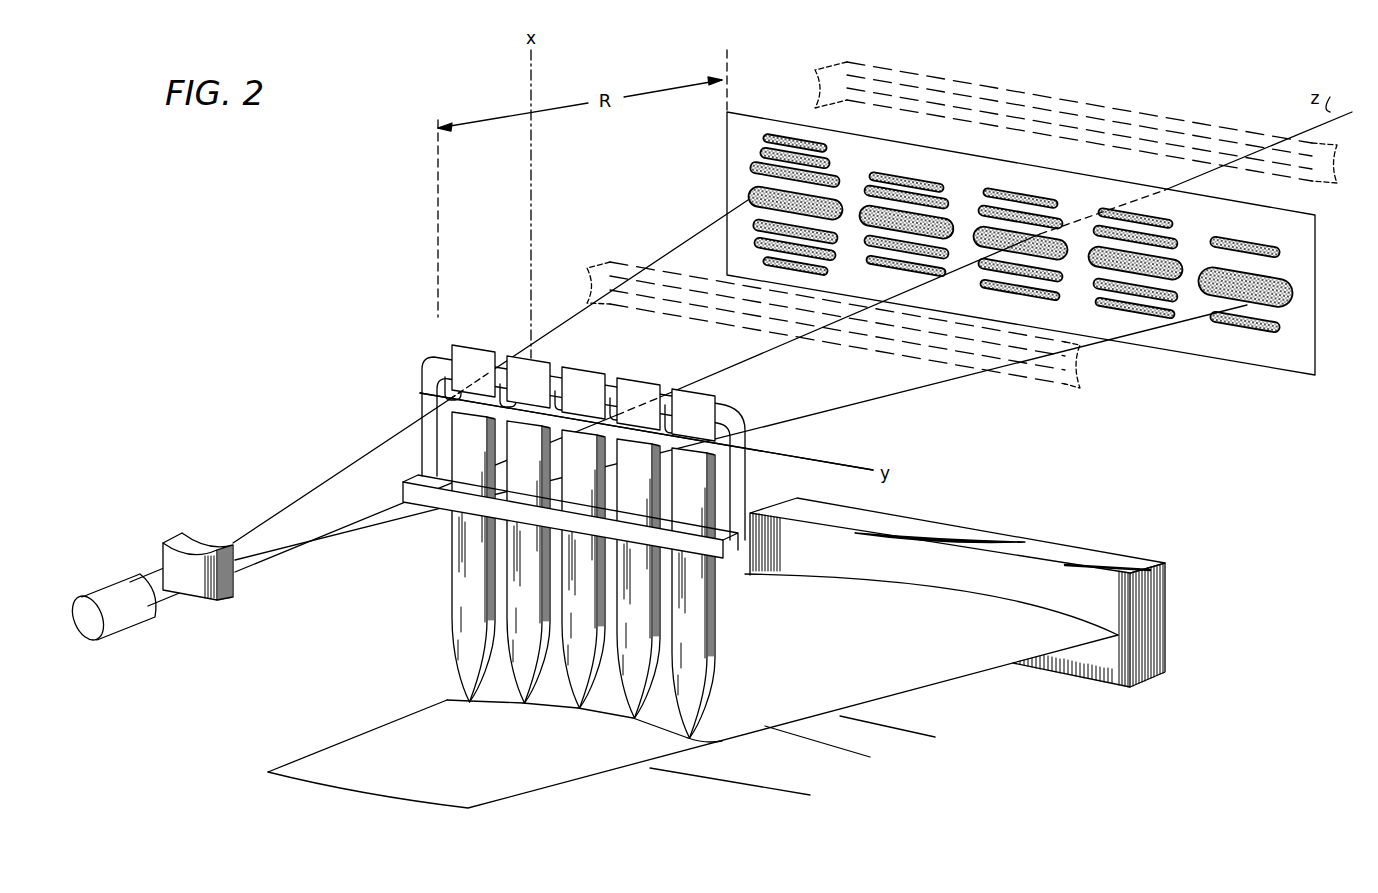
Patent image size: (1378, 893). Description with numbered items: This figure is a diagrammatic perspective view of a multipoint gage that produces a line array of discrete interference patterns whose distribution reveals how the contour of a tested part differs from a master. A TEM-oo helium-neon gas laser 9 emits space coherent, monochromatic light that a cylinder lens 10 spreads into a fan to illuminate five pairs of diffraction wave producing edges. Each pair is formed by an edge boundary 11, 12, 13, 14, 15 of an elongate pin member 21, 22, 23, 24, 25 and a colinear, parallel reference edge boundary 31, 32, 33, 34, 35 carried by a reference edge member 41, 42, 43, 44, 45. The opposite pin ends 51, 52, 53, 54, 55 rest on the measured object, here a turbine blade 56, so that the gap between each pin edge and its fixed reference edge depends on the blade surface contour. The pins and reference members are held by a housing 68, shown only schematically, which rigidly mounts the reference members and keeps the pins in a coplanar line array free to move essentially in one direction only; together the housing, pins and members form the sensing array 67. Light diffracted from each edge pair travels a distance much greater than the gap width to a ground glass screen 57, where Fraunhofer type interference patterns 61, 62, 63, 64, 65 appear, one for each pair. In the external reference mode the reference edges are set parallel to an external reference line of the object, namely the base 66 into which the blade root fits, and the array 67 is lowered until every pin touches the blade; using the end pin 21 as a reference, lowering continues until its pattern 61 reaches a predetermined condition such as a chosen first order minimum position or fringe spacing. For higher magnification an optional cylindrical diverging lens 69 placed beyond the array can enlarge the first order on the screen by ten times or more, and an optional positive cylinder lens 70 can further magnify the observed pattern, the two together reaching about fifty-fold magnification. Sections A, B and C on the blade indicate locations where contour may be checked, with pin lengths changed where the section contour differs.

The He-Ne gas laser 9 is at (125, 630).
The cylinder lens 10 is at (203, 600).
The edge boundary 11 is at (693, 593).
The edge boundary 12 is at (638, 578).
The edge boundary 13 is at (583, 568).
The edge boundary 14 is at (528, 562).
The edge boundary 15 is at (473, 557).
The pin member 21 is at (680, 640).
The pin member 22 is at (625, 634).
The pin member 23 is at (570, 627).
The pin member 24 is at (515, 622).
The pin member 25 is at (460, 615).
The reference edge boundary 31 is at (662, 400).
The reference edge boundary 32 is at (614, 382).
The reference edge boundary 33 is at (555, 378).
The reference edge boundary 34 is at (502, 357).
The reference edge boundary 35 is at (420, 393).
The reference edge member 41 is at (712, 392).
The reference edge member 42 is at (657, 378).
The reference edge member 43 is at (596, 367).
The reference edge member 44 is at (527, 358).
The reference edge member 45 is at (478, 345).
The pin end 51 is at (688, 739).
The pin end 52 is at (632, 720).
The pin end 53 is at (578, 710).
The pin end 54 is at (522, 706).
The pin end 55 is at (468, 704).
The turbine blade 56 is at (729, 655).
The ground glass screen 57 is at (1018, 213).
The interference pattern 61 is at (1290, 285).
The interference pattern 62 is at (1135, 216).
The interference pattern 63 is at (1040, 200).
The interference pattern 64 is at (928, 186).
The interference pattern 65 is at (757, 160).
The base 66 is at (1148, 676).
The sensing array 67 is at (609, 508).
The housing 68 is at (426, 360).
The cylindrical diverging lens 69 is at (625, 262).
The positive cylinder lens 70 is at (908, 70).